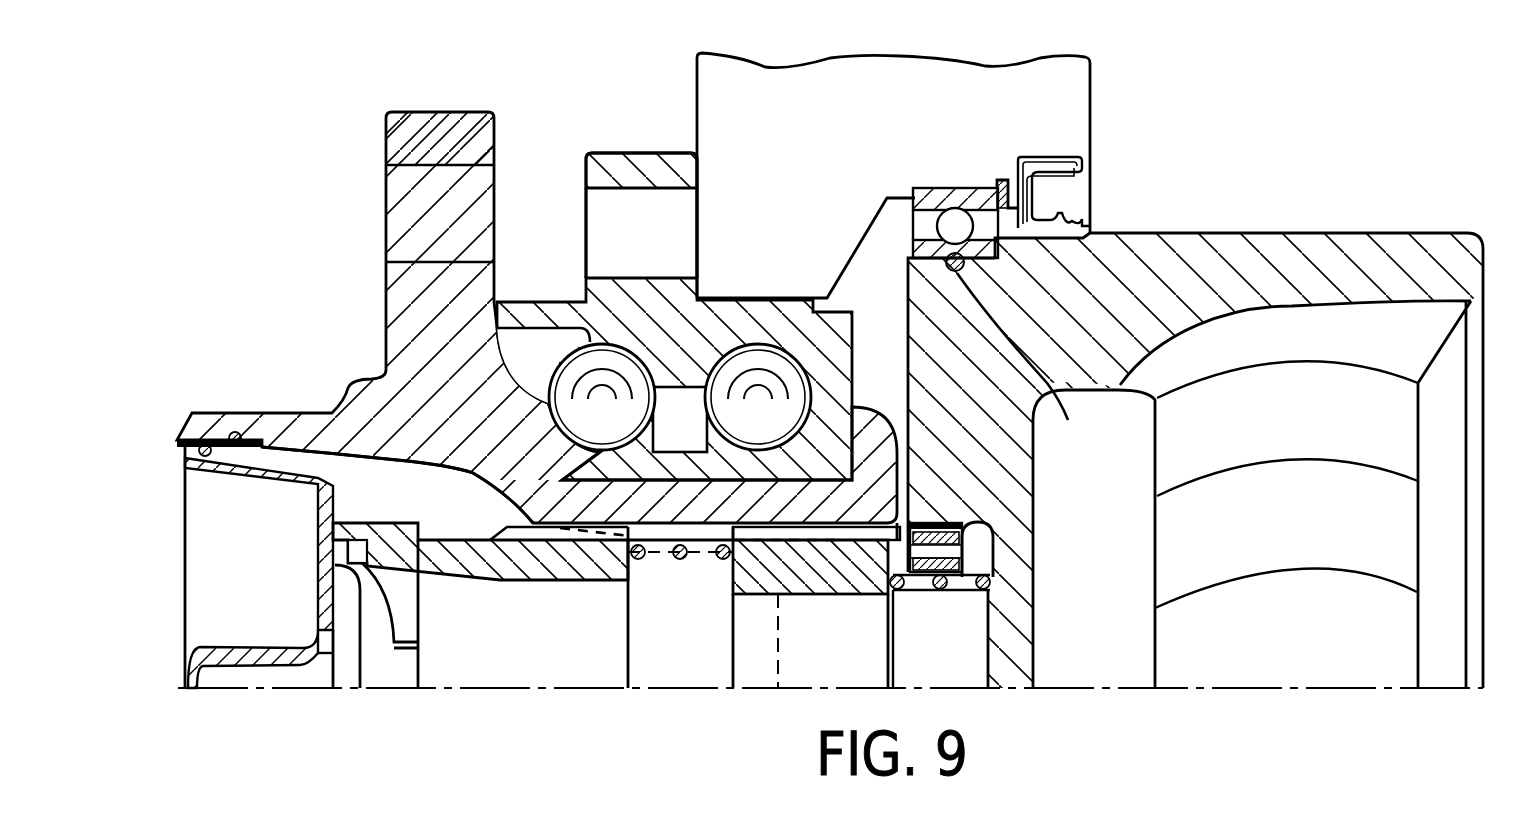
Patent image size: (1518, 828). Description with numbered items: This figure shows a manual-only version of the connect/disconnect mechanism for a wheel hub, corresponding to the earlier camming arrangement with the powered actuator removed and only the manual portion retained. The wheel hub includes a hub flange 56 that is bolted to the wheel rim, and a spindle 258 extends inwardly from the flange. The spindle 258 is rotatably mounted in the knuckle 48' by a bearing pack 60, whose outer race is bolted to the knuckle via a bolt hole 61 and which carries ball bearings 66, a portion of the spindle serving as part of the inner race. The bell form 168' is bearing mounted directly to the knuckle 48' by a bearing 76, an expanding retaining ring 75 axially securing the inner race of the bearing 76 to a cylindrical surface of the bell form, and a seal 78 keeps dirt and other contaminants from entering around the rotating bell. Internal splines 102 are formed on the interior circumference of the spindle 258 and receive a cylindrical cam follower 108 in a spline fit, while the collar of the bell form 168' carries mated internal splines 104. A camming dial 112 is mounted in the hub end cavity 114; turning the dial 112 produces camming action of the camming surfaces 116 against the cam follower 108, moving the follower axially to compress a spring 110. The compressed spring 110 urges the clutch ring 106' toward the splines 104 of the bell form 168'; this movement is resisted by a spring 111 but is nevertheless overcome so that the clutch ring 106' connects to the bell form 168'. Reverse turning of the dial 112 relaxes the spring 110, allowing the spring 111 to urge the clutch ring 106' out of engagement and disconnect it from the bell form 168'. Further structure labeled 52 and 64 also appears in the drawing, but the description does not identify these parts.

The knuckle 48' is at (866, 162).
The differential housing 52 is at (1352, 250).
The hub flange 56 is at (398, 293).
The bearing pack 60 is at (591, 129).
The bolt hole 61 is at (605, 212).
The bearing outer race 64 is at (595, 312).
The ball bearings 66 is at (747, 390).
The expanding retaining ring 75 is at (1013, 473).
The bearing 76 is at (960, 268).
The seal 78 is at (1065, 184).
The internal splines 102 is at (710, 532).
The internal splines 104 is at (957, 543).
The clutch ring 106' is at (816, 605).
The cam follower 108 is at (548, 555).
The spring 110 is at (645, 562).
The spring 111 is at (900, 592).
The camming dial 112 is at (322, 535).
The hub end cavity 114 is at (370, 462).
The camming surfaces 116 is at (360, 688).
The bell form 168' is at (1094, 520).
The spindle 258 is at (604, 507).